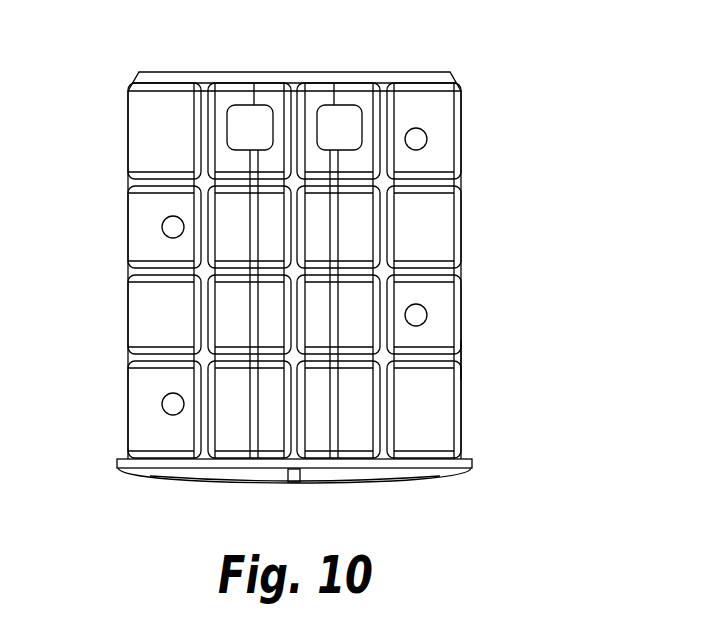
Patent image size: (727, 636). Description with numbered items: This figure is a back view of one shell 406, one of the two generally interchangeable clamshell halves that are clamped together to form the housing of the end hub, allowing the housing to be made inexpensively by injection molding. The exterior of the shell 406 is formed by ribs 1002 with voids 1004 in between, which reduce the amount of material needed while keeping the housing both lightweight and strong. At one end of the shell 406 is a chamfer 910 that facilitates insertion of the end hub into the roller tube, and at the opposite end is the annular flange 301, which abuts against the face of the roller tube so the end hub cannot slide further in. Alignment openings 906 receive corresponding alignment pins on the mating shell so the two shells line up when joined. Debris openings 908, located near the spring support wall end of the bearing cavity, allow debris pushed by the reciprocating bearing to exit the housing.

The chamfer 910 is at (467, 95).
The debris openings 908 is at (228, 106).
The voids 1004 is at (416, 293).
The ribs 1002 is at (461, 358).
The alignment openings 906 is at (162, 400).
The annular flange 301 is at (472, 470).
The shell 406 is at (166, 462).